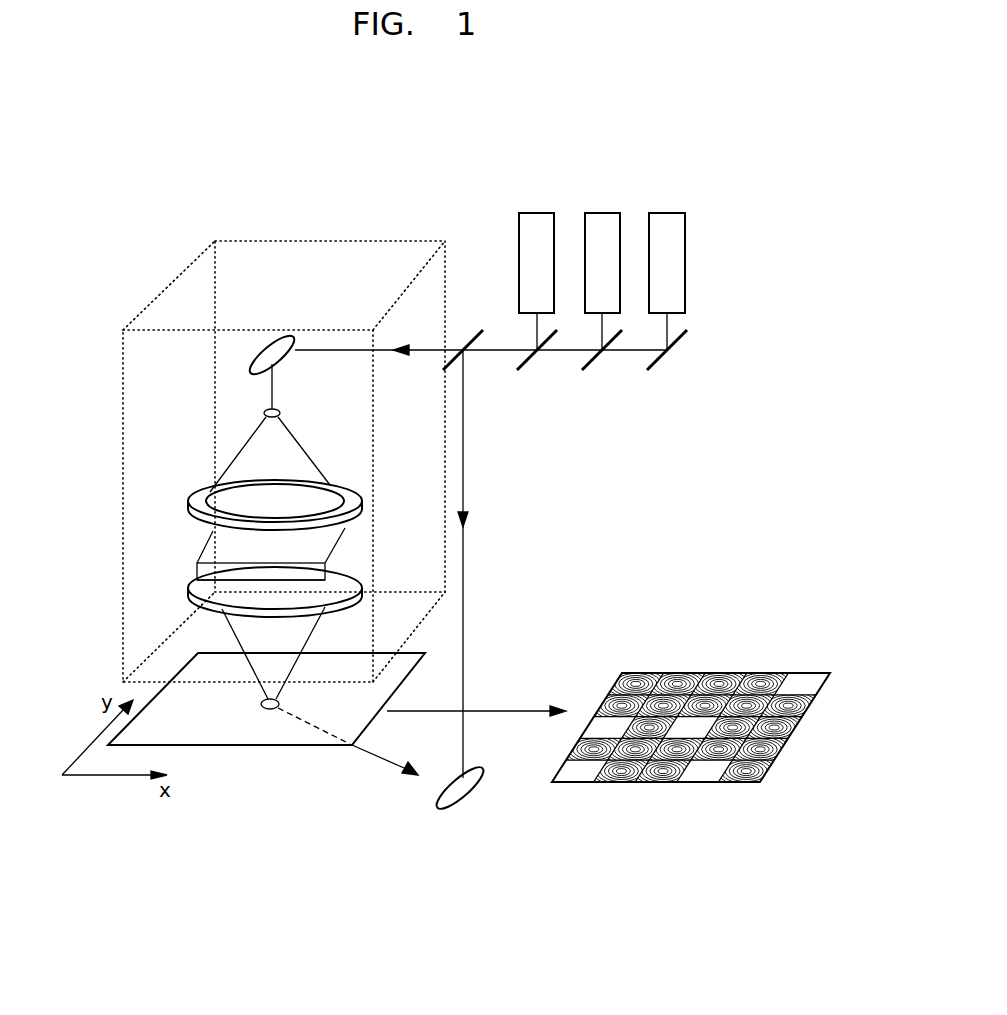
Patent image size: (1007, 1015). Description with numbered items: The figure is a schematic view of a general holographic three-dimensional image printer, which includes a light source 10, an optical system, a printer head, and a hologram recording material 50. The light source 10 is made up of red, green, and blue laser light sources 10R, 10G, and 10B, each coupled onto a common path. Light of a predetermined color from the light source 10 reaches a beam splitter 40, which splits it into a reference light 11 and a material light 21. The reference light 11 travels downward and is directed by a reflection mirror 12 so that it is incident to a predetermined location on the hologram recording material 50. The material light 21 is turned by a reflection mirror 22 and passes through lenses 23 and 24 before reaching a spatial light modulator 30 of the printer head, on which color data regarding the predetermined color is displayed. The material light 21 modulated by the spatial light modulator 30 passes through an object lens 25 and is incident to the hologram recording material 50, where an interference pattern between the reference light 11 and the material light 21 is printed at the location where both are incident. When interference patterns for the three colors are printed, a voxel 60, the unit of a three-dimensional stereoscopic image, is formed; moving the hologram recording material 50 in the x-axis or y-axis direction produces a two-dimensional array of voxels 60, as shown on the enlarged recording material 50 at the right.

The light source 10 is at (712, 194).
The red laser light source 10R is at (538, 212).
The green laser light source 10G is at (603, 212).
The blue laser light source 10B is at (668, 212).
The reference light 11 is at (463, 580).
The reflection mirror 12 is at (458, 806).
The material light 21 is at (340, 350).
The reflection mirror 22 is at (265, 350).
The lens 23 is at (263, 412).
The lens 24 is at (218, 503).
The object lens 25 is at (192, 588).
The spatial light modulator 30 is at (207, 551).
The beam splitter 40 is at (483, 330).
The hologram recording material 50 is at (268, 746).
The voxel 60 is at (735, 673).